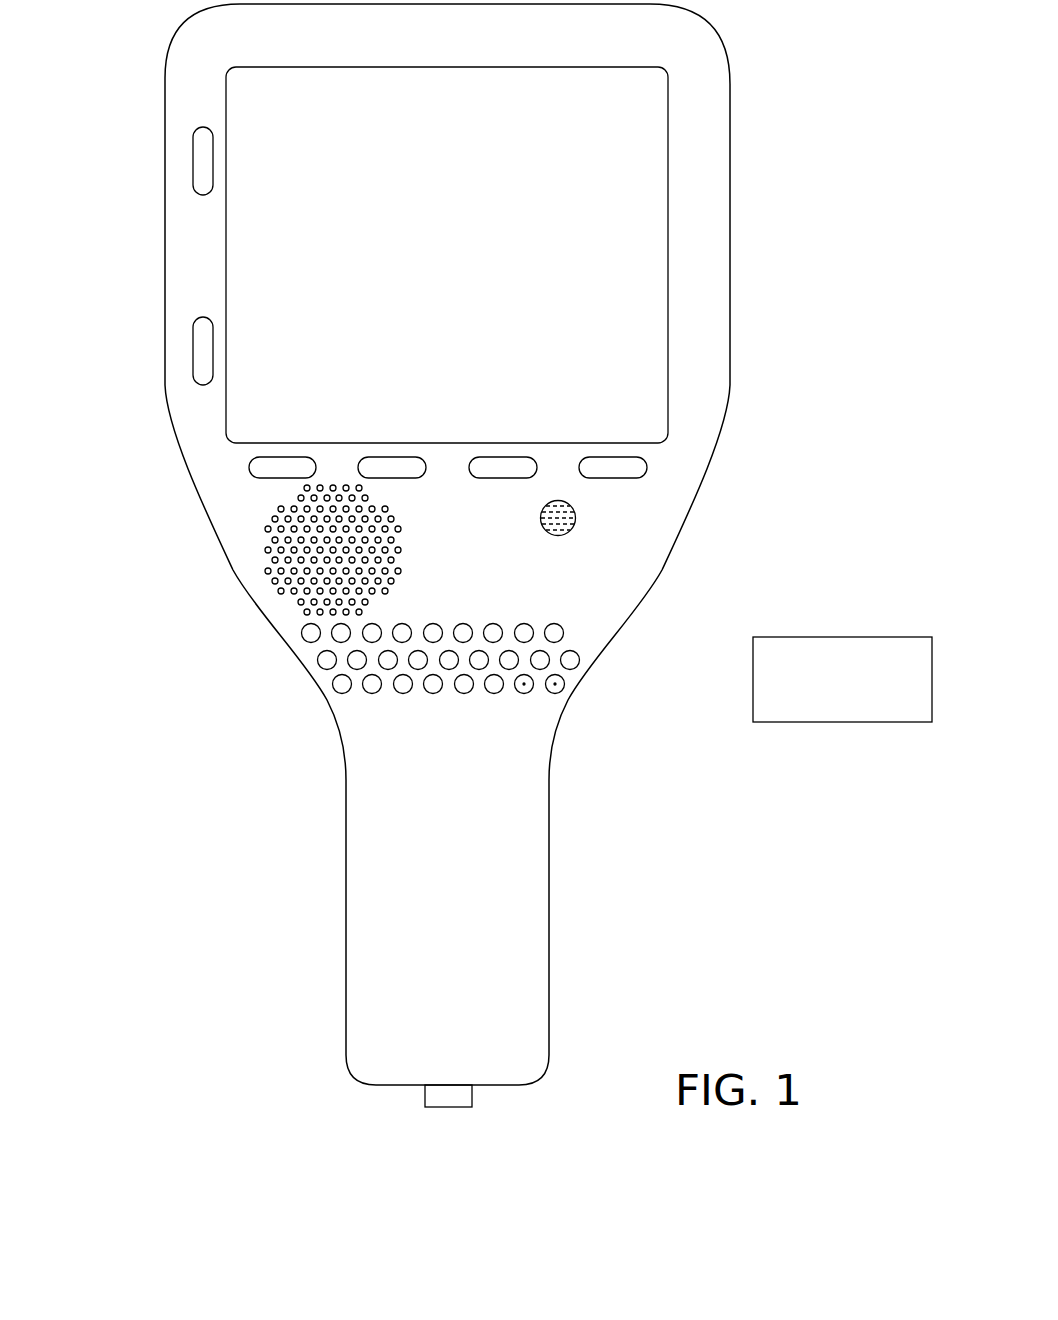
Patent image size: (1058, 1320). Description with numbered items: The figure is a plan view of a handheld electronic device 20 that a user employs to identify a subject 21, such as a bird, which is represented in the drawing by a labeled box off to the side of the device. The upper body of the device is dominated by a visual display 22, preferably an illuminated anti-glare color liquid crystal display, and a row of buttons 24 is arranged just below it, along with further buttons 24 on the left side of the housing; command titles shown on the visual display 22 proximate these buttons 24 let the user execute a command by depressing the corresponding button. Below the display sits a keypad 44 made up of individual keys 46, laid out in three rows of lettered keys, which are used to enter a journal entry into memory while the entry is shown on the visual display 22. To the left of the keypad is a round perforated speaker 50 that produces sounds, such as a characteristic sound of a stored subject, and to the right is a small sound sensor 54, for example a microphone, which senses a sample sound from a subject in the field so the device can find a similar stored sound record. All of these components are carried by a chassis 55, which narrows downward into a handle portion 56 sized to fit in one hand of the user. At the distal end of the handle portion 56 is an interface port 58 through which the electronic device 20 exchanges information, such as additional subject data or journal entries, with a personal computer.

The electronic device 20 is at (692, 902).
The subject 21 is at (833, 652).
The visual display 22 is at (590, 247).
The buttons 24 is at (203, 156).
The keypad 44 is at (530, 701).
The keys 46 is at (580, 655).
The speaker 50 is at (293, 578).
The sound sensor 54 is at (577, 515).
The chassis 55 is at (183, 828).
The handle portion 56 is at (300, 918).
The interface port 58 is at (443, 1103).